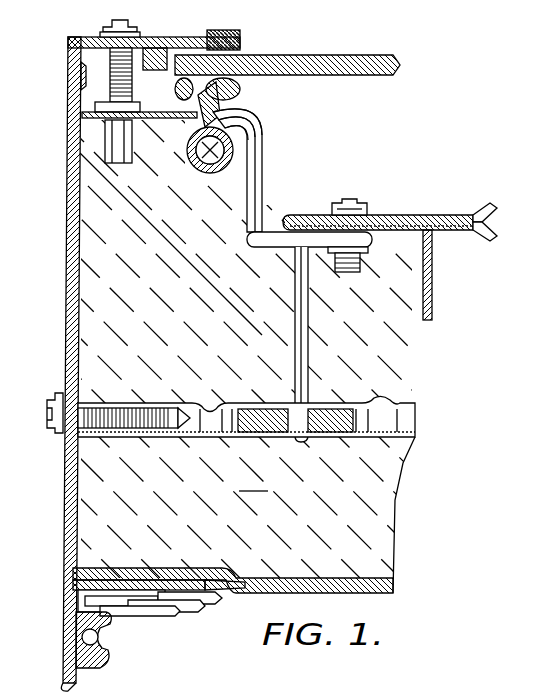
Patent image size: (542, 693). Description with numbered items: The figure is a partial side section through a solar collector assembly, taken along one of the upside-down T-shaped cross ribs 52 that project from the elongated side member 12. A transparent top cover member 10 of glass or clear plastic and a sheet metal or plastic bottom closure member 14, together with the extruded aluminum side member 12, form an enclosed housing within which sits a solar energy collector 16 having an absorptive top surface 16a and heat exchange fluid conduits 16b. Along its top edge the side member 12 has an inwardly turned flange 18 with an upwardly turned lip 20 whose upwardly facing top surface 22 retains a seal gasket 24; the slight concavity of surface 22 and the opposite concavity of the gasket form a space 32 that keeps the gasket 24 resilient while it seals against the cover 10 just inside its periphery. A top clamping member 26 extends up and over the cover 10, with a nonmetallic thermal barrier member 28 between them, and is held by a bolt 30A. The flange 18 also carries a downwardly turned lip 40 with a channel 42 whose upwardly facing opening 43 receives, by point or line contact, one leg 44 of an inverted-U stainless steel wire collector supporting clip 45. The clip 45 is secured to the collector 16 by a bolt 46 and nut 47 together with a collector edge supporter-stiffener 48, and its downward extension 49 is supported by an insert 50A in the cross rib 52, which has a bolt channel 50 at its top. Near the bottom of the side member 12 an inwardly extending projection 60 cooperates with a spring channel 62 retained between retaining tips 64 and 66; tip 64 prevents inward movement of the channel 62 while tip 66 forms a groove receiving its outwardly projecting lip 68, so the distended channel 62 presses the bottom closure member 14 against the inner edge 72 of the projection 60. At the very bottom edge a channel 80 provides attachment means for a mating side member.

The top cover member 10 is at (322, 56).
The elongated side member 12 is at (80, 272).
The bottom closure member 14 is at (386, 596).
The solar energy collector 16 is at (420, 215).
The absorptive top surface 16a is at (474, 210).
The heat exchange fluid conduits 16b is at (488, 234).
The inwardly turned flange 18 is at (152, 122).
The upwardly turned lip 20 is at (250, 115).
The upwardly facing top surface 22 is at (240, 78).
The seal gasket 24 is at (175, 86).
The top clamping member 26 is at (157, 38).
The nonmetallic thermal barrier member 28 is at (240, 42).
The bolt 30A is at (110, 73).
The space 32 is at (245, 100).
The downwardly turned lip 40 is at (196, 122).
The channel 42 is at (198, 165).
The upwardly facing opening 43 is at (240, 135).
The leg 44 is at (226, 167).
The collector supporting clip 45 is at (262, 184).
The bolt 46 is at (360, 200).
The nut 47 is at (338, 255).
The collector edge supporter-stiffener 48 is at (423, 294).
The downward extension 49 is at (308, 355).
The bolt channel 50 is at (135, 405).
The insert 50A is at (268, 415).
The cross rib 52 is at (253, 480).
The inwardly extending projection 60 is at (120, 590).
The spring channel 62 is at (150, 606).
The spring channel retaining tip 64 is at (112, 582).
The spring channel retaining tip 66 is at (130, 612).
The outwardly projecting lip 68 is at (185, 602).
The inner edge 72 is at (296, 582).
The channel 80 is at (98, 640).